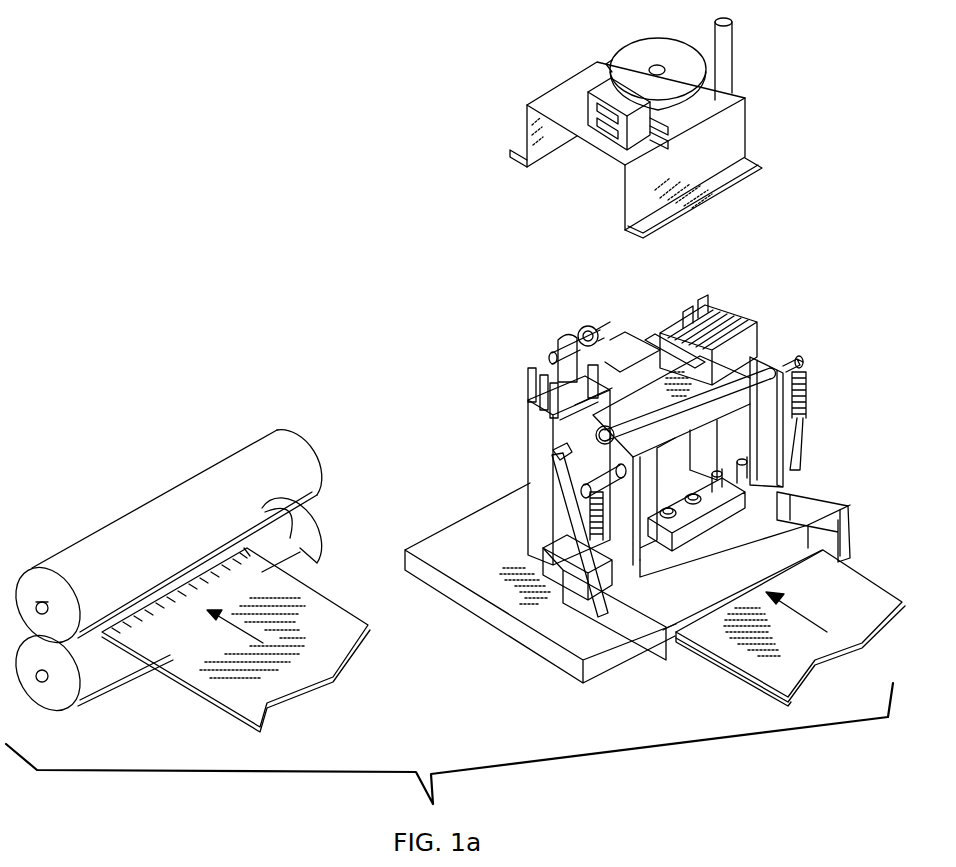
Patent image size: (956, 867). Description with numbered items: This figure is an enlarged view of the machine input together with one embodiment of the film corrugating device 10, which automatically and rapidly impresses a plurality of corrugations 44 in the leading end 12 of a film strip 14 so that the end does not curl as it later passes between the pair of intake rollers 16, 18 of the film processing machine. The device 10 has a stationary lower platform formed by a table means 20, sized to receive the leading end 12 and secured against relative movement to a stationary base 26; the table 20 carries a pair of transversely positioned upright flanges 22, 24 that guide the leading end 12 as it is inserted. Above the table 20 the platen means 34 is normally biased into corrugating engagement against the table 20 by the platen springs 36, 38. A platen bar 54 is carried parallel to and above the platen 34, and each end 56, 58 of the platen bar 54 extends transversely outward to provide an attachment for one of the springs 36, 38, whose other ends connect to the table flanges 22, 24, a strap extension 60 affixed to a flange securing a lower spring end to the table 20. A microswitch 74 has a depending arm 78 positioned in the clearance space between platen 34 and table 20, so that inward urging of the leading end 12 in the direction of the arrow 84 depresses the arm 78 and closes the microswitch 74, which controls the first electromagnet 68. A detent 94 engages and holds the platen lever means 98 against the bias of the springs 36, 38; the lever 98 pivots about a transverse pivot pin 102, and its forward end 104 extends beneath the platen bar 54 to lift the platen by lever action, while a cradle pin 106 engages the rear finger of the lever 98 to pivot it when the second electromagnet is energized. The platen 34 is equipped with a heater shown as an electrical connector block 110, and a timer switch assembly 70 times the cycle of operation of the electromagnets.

The film corrugating device 10 is at (636, 338).
The leading end 12 is at (267, 580).
The film strip 14 is at (687, 58).
The intake roller 16 is at (100, 673).
The intake roller 18 is at (105, 542).
The table means 20 is at (699, 635).
The upright flange 22 is at (650, 633).
The upright flange 24 is at (840, 533).
The stationary base 26 is at (477, 515).
The platen means 34 is at (790, 512).
The platen spring 36 is at (593, 527).
The platen spring 38 is at (805, 398).
The corrugations 44 is at (285, 532).
The platen bar 54 is at (658, 410).
The end of platen bar 56 is at (595, 510).
The end of platen bar 58 is at (800, 358).
The strap extension 60 is at (597, 585).
The first electromagnet means 68 is at (745, 310).
The timer switch assembly 70 is at (555, 88).
The microswitch 74 is at (535, 423).
The depending arm 78 is at (555, 483).
The arrow 84 is at (797, 613).
The detent 94 is at (600, 377).
The platen lever means 98 is at (658, 386).
The transverse pivot pin 102 is at (607, 433).
The forward end of platen lever 104 is at (673, 443).
The cradle pin 106 is at (603, 338).
The electrical connector block 110 is at (687, 525).